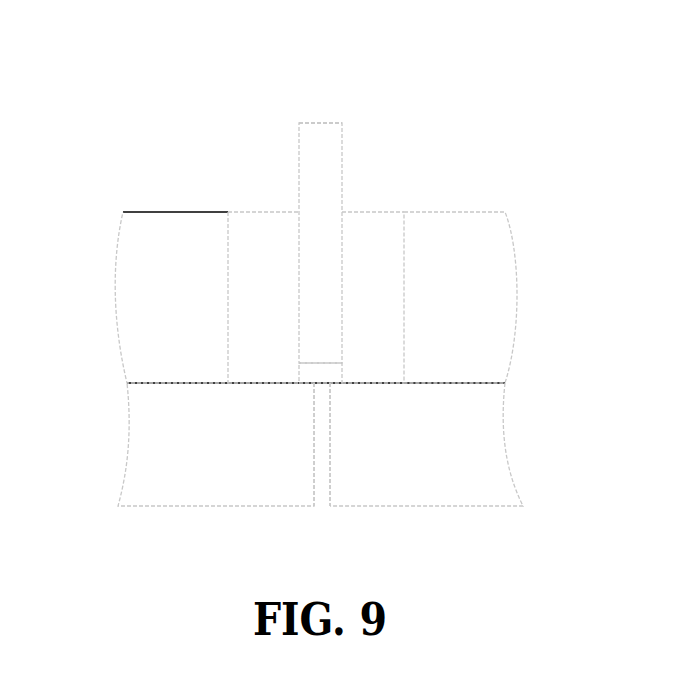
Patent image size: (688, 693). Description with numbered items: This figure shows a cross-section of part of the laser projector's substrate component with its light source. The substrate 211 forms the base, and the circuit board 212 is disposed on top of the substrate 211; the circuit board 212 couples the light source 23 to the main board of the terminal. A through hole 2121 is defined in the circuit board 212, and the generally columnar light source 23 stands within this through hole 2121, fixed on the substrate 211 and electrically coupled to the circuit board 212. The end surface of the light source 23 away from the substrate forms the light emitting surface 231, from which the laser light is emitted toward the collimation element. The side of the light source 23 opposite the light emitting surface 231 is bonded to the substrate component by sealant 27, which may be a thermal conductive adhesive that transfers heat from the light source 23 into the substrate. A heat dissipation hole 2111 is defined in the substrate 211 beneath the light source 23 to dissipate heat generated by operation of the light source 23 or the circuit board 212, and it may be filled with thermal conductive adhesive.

The substrate 211 is at (460, 496).
The heat dissipation hole 2111 is at (322, 504).
The circuit board 212 is at (158, 223).
The through hole 2121 is at (260, 243).
The light source 23 is at (330, 187).
The light emitting surface 231 is at (320, 123).
The sealant 27 is at (300, 381).